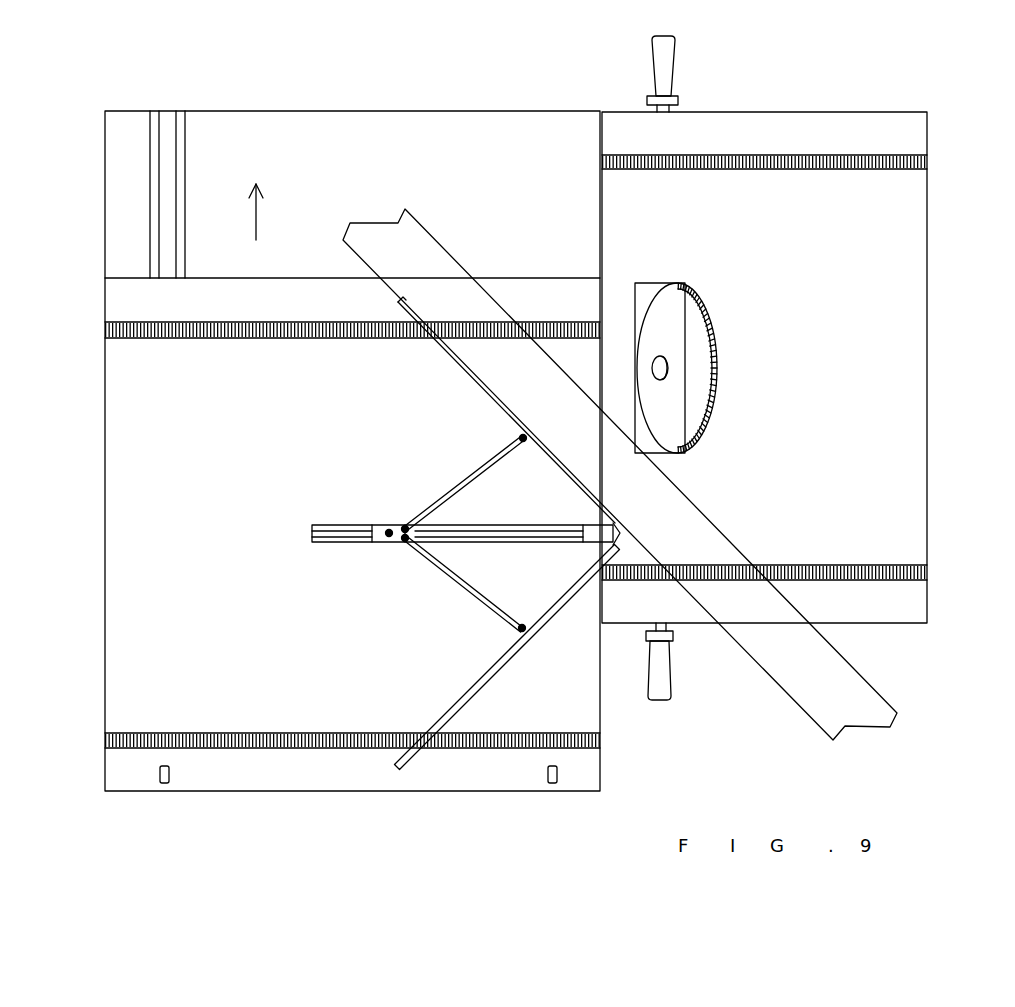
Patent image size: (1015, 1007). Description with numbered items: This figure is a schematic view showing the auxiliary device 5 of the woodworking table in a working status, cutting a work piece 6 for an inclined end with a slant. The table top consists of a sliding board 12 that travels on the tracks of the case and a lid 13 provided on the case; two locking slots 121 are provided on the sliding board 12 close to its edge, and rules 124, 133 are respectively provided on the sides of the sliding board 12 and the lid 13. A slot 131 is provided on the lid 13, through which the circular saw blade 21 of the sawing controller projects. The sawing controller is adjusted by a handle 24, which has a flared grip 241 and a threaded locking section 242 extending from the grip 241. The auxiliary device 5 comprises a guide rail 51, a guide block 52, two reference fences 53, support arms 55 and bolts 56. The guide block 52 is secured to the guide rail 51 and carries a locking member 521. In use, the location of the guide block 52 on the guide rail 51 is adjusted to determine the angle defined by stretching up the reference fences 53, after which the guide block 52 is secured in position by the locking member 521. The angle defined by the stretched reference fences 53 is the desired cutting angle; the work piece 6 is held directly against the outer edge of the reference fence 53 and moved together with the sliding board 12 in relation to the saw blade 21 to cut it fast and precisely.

The auxiliary device 5 is at (429, 650).
The work piece 6 is at (425, 247).
The sliding board 12 is at (128, 703).
The lid 13 is at (918, 415).
The circular saw blade 21 is at (683, 361).
The handle 24 is at (708, 682).
The guide rail 51 is at (325, 540).
The guide block 52 is at (378, 543).
The reference fences 53 is at (477, 600).
The support arms 55 is at (440, 728).
The bolts 56 is at (522, 632).
The locking slots 121 is at (164, 783).
The rule 124 is at (115, 742).
The slot 131 is at (638, 283).
The rule 133 is at (636, 162).
The flared grip 241 is at (662, 683).
The threaded locking section 242 is at (675, 633).
The locking member 521 is at (389, 536).